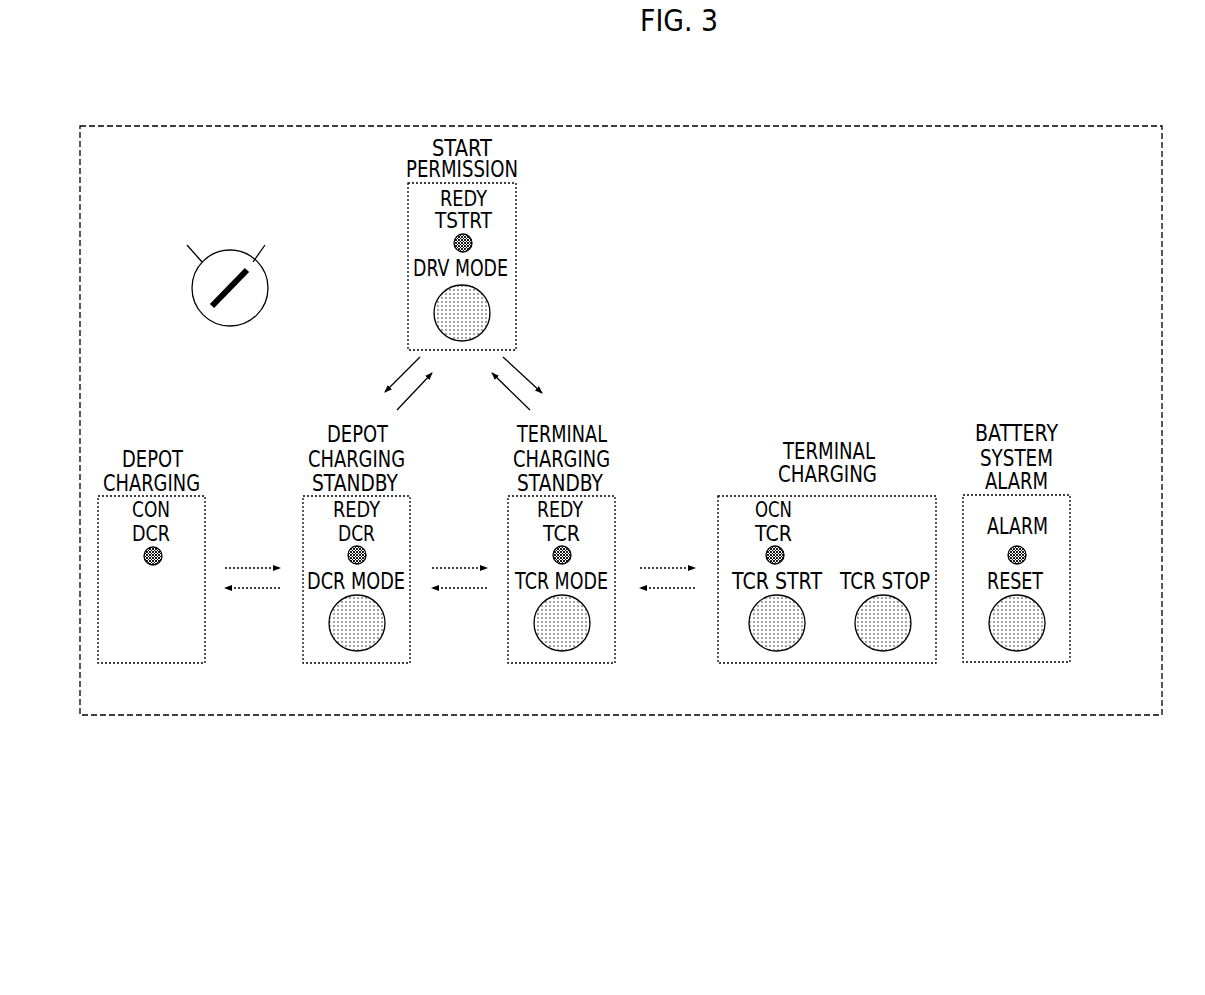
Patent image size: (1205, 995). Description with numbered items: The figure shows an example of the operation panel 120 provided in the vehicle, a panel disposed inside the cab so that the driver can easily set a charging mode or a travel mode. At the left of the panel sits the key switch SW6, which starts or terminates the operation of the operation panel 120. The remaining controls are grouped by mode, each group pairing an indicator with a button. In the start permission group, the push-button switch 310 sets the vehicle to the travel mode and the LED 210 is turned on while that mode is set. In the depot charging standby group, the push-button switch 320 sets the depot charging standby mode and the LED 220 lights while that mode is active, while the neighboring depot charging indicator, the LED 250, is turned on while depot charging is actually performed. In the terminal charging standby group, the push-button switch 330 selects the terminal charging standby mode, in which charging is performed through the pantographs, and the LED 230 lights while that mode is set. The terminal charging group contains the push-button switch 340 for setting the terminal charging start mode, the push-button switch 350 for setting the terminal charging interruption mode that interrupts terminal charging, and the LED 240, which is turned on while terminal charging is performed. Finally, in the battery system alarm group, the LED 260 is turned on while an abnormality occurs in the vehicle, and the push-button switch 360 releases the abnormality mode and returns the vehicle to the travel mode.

The operation panel 120 is at (532, 124).
The key switch SW6 is at (231, 259).
The LED 210 is at (472, 243).
The LED 220 is at (366, 553).
The LED 230 is at (571, 552).
The LED 240 is at (767, 549).
The LED 250 is at (162, 553).
The LED 260 is at (1026, 553).
The push-button switch 310 is at (485, 309).
The push-button switch 320 is at (332, 637).
The push-button switch 330 is at (538, 640).
The push-button switch 340 is at (762, 650).
The push-button switch 350 is at (870, 648).
The push-button switch 360 is at (1023, 650).